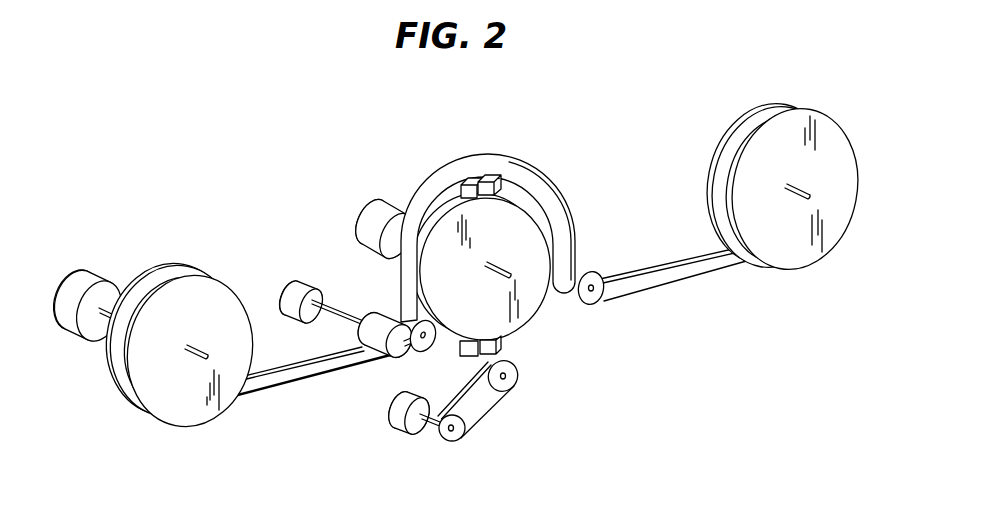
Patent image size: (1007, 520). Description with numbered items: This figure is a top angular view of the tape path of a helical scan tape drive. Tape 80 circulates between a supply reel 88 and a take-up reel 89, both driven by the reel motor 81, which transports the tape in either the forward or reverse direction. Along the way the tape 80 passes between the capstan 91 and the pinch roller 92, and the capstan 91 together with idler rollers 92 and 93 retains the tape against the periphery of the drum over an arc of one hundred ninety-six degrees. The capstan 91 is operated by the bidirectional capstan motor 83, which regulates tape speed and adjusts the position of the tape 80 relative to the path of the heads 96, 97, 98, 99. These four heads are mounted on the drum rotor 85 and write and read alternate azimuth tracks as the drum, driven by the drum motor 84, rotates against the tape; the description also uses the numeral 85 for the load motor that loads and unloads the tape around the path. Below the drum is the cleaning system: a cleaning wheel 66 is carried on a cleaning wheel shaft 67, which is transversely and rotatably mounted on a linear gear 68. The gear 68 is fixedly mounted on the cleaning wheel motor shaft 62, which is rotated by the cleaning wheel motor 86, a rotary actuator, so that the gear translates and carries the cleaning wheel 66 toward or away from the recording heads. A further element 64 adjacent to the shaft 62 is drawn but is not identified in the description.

The cleaning wheel motor shaft 62 is at (432, 430).
The pulley 64 is at (465, 437).
The cleaning wheel 66 is at (522, 380).
The cleaning wheel shaft 67 is at (503, 391).
The linear gear 68 is at (473, 402).
The tape 80 is at (302, 378).
The reel motor 81 is at (70, 282).
The capstan motor 83 is at (300, 282).
The drum motor 84 is at (368, 212).
The drum rotor 85 is at (535, 302).
The cleaning wheel motor 86 is at (402, 430).
The supply reel 88 is at (172, 430).
The take-up reel 89 is at (855, 165).
The capstan 91 is at (363, 330).
The pinch roller 92 is at (425, 352).
The idler roller 93 is at (583, 270).
The head 96 is at (463, 184).
The head 97 is at (497, 181).
The head 98 is at (465, 357).
The head 99 is at (497, 347).